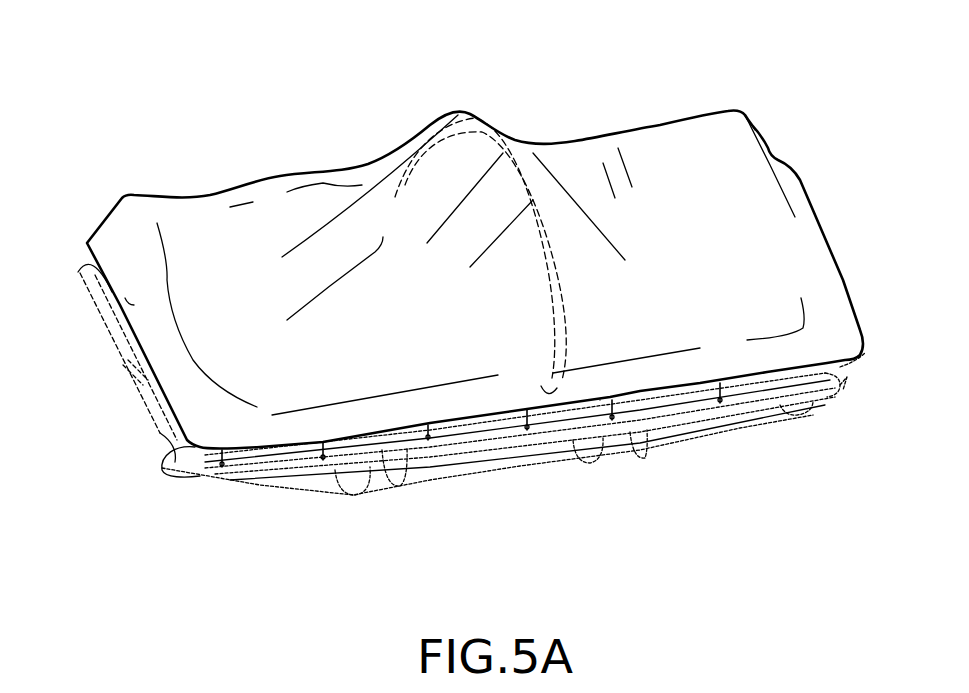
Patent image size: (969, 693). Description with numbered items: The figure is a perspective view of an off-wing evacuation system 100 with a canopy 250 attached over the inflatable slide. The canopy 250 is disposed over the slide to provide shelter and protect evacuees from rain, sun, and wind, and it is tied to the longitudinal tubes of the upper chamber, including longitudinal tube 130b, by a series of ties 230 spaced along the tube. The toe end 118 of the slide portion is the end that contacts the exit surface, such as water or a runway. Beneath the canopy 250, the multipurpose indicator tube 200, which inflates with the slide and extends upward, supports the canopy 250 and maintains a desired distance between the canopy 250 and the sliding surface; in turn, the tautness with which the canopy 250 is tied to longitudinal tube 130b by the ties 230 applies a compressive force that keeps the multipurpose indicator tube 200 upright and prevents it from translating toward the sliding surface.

The off-wing evacuation system 100 is at (146, 134).
The multipurpose indicator tube 200 is at (432, 127).
The canopy 250 is at (611, 321).
The toe end 118 is at (134, 345).
The ties 230 is at (428, 440).
The longitudinal tube 130b is at (502, 442).